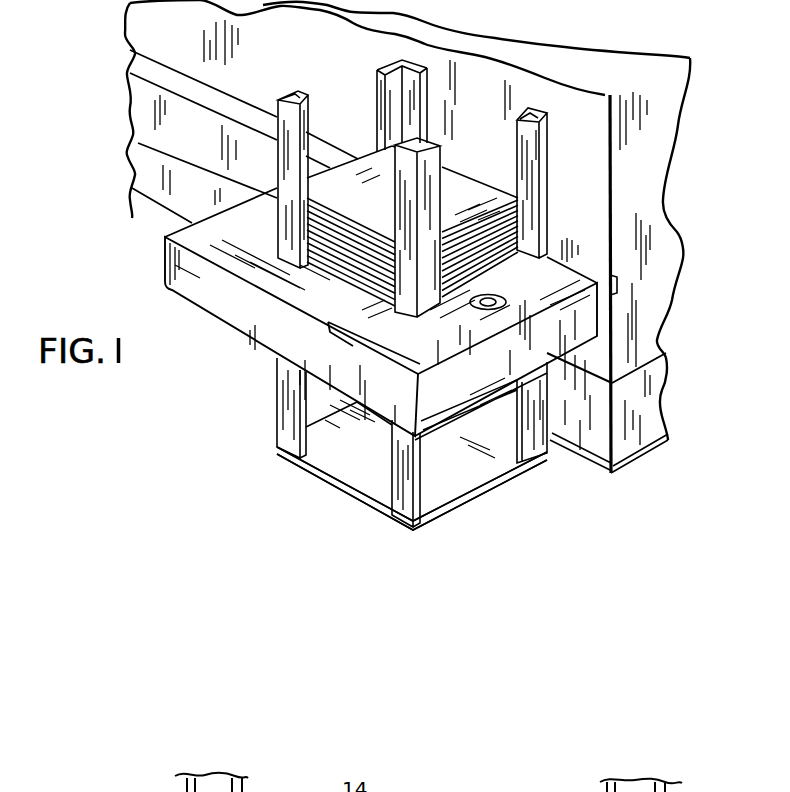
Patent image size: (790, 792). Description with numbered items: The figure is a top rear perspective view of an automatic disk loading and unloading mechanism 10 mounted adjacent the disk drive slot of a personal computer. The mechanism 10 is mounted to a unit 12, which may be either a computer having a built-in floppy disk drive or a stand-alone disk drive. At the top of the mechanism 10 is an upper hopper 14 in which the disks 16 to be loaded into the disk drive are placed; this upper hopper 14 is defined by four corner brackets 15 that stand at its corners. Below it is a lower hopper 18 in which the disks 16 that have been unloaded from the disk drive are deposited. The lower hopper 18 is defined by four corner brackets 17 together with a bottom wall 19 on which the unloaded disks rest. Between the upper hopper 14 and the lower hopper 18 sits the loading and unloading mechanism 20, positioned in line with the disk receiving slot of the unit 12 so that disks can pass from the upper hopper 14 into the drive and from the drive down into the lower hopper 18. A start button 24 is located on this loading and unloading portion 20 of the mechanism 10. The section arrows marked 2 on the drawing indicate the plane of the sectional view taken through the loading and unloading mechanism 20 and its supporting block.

The automatic disk loading and unloading mechanism 10 is at (238, 425).
The unit 12 is at (668, 128).
The upper hopper 14 is at (353, 134).
The corner brackets 15 is at (400, 206).
The disks 16 is at (463, 181).
The corner brackets 17 is at (427, 458).
The lower hopper 18 is at (358, 449).
The bottom wall 19 is at (368, 482).
The loading and unloading mechanism 20 is at (173, 262).
The start button 24 is at (460, 322).
The section line 2- 2 is at (552, 193).